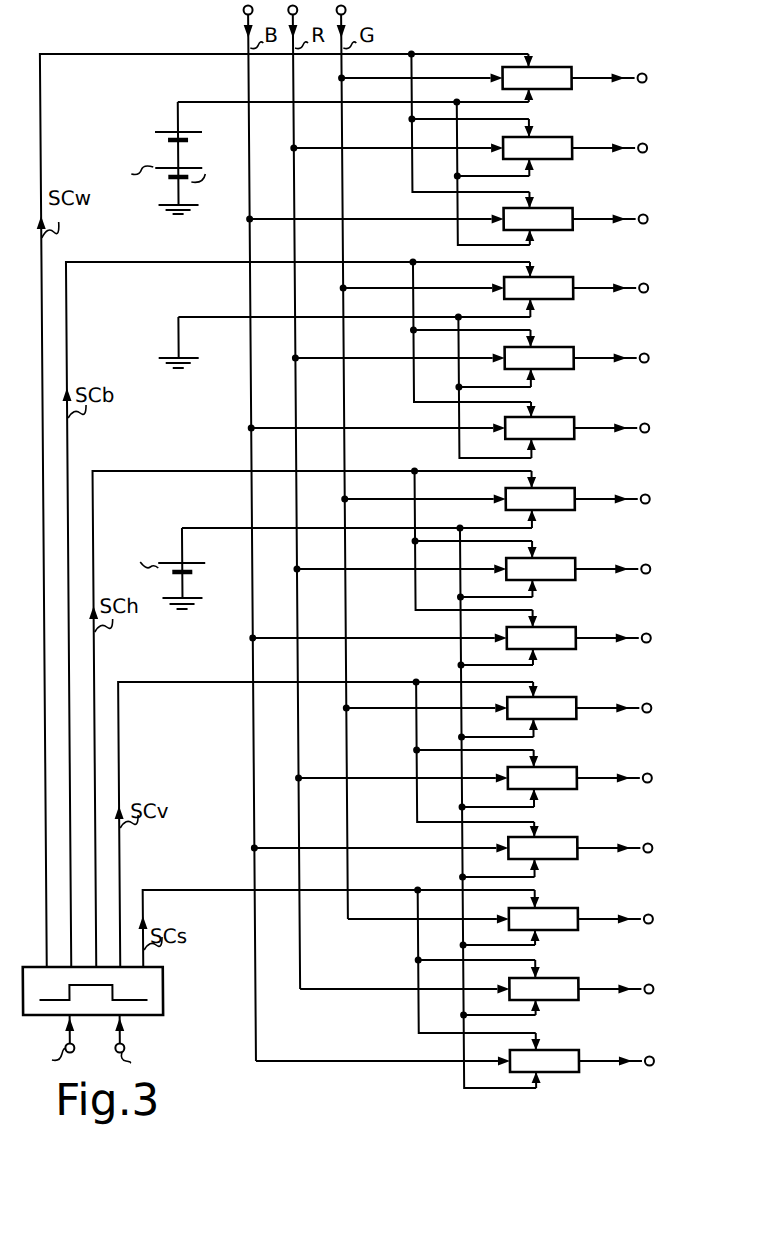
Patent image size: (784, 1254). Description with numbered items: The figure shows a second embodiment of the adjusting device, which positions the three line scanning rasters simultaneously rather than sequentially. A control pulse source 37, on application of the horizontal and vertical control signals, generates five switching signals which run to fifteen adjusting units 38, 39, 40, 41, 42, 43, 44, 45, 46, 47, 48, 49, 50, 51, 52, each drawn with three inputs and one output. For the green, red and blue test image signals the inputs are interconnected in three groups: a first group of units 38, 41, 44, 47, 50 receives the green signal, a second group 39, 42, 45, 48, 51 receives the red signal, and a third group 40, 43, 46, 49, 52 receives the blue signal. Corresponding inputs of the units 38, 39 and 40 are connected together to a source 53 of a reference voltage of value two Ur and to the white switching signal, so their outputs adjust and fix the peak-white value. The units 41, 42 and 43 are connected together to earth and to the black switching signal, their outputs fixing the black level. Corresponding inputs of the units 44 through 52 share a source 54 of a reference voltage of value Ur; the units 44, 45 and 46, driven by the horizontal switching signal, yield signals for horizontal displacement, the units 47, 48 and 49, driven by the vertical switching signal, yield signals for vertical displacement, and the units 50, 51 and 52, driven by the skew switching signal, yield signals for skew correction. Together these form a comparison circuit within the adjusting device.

The control pulse source 37 is at (156, 993).
The adjusting unit 38 is at (562, 89).
The adjusting unit 39 is at (562, 159).
The adjusting unit 40 is at (562, 230).
The adjusting unit 41 is at (562, 299).
The adjusting unit 42 is at (562, 369).
The adjusting unit 43 is at (562, 439).
The adjusting unit 44 is at (562, 510).
The adjusting unit 45 is at (562, 580).
The adjusting unit 46 is at (562, 649).
The adjusting unit 47 is at (562, 719).
The adjusting unit 48 is at (562, 789).
The adjusting unit 49 is at (562, 859).
The adjusting unit 50 is at (562, 930).
The adjusting unit 51 is at (562, 1000).
The adjusting unit 52 is at (562, 1072).
The source of a reference voltage of value 2 Ur 53 is at (192, 142).
The source of a reference voltage of value Ur 54 is at (192, 570).